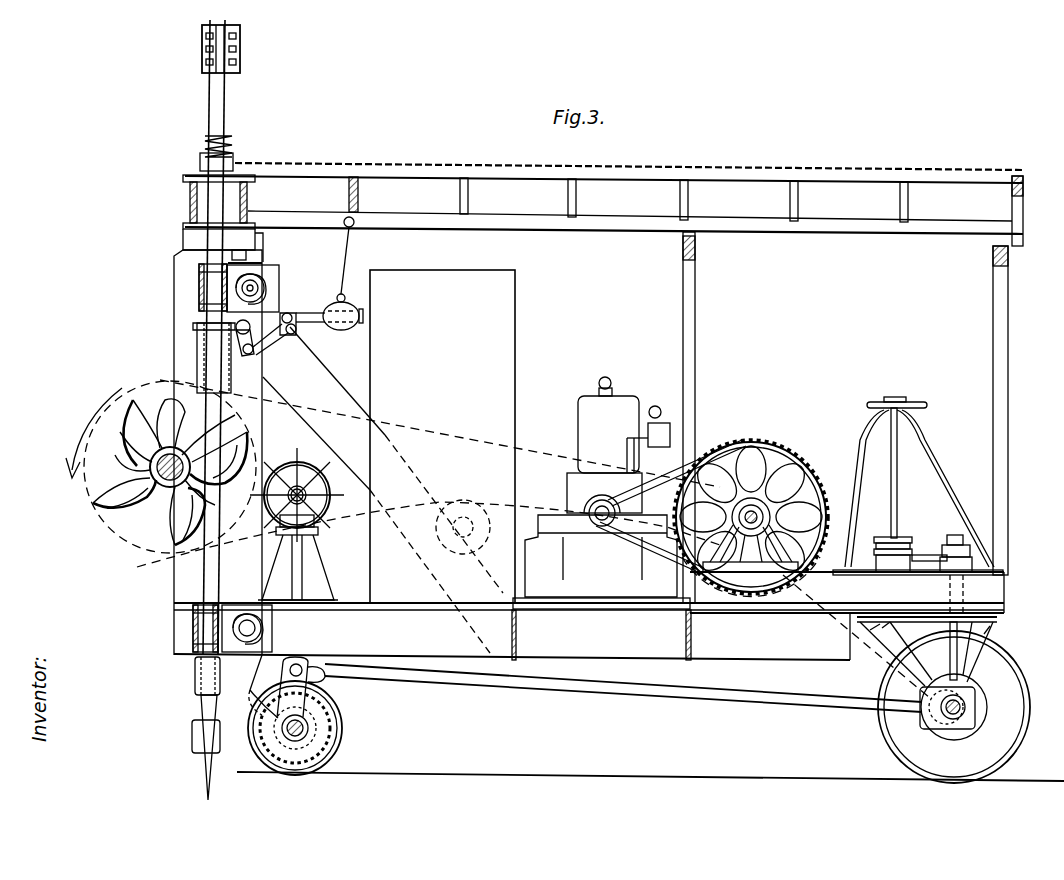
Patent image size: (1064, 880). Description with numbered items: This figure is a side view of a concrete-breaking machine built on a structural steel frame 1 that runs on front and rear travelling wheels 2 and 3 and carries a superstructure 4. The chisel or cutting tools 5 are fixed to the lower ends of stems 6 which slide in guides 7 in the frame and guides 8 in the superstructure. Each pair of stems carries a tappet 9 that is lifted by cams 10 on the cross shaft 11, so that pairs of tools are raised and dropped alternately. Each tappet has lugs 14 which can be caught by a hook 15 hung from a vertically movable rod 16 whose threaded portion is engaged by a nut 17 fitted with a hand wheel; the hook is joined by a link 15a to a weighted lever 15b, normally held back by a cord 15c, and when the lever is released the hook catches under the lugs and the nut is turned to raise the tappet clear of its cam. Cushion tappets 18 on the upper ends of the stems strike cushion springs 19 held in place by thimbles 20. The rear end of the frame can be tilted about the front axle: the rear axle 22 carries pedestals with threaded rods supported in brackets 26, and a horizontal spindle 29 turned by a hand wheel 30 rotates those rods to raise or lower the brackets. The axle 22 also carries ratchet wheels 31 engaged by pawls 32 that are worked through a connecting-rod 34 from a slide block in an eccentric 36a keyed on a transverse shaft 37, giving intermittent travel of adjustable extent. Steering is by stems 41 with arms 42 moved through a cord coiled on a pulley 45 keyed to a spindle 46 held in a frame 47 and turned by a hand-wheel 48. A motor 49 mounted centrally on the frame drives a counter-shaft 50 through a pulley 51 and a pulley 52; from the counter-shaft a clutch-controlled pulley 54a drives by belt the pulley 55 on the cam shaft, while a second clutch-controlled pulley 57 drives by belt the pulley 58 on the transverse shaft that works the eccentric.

The frame 1 is at (174, 628).
The front travelling wheels 2 is at (1030, 712).
The rear travelling wheels 3 is at (342, 718).
The superstructure 4 is at (243, 198).
The chisel or cutting tools 5 is at (205, 762).
The stems 6 is at (205, 578).
The guides 7 is at (193, 638).
The guides 8 is at (199, 291).
The tappet 9 is at (205, 368).
The cams 10 is at (115, 505).
The cross shaft 11 is at (160, 482).
The lugs or shoulders 14 is at (197, 337).
The hook 15 is at (244, 356).
The link 15a is at (286, 340).
The weighted lever 15b is at (330, 326).
The cord 15c is at (375, 250).
The vertically movable rod 16 is at (263, 247).
The rotatable nut 17 is at (262, 263).
The cushion tappets 18 is at (238, 58).
The cushion springs 19 is at (234, 146).
The thimbles 20 is at (200, 162).
The axle 22 is at (307, 733).
The bracket 26 is at (312, 577).
The horizontal spindle 29 is at (322, 476).
The hand wheel 30 is at (322, 494).
The ratchet wheels 31 is at (265, 762).
The pawls 32 is at (223, 676).
The connecting-rod 34 is at (696, 695).
The eccentric 36a is at (975, 690).
The transverse shaft 37 is at (950, 722).
The stems 41 is at (948, 592).
The arms 42 is at (922, 545).
The pulley 45 is at (880, 537).
The spindle 46 is at (897, 498).
The frame 47 is at (932, 465).
The hand-wheel 48 is at (915, 410).
The motor 49 is at (601, 493).
The counter-shaft 50 is at (770, 500).
The chain-wheel or pulley 51 is at (602, 528).
The chain-wheel or pulley 52 is at (775, 452).
The pulley 54a is at (751, 512).
The pulley 55 is at (156, 553).
The pulley 57 is at (750, 557).
The pulley 58 is at (968, 736).